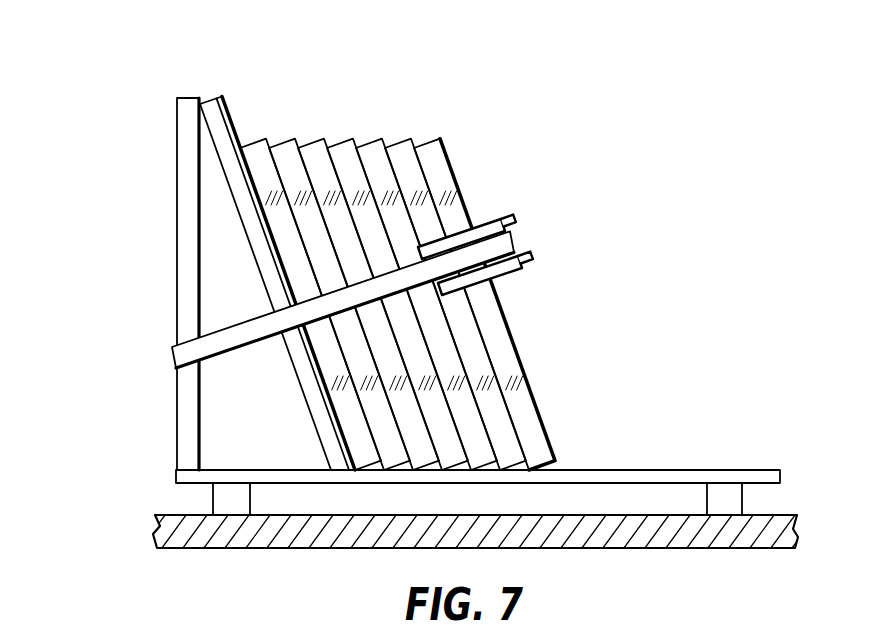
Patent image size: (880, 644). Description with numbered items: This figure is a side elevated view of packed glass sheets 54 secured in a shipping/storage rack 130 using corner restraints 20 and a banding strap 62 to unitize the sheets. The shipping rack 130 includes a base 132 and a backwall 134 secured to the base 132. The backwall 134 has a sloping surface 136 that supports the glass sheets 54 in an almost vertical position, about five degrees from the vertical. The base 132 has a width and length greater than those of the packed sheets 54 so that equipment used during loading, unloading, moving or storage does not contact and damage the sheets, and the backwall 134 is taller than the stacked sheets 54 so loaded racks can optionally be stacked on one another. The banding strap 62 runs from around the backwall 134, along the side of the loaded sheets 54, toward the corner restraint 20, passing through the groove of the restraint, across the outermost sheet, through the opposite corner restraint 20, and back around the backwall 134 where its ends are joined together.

The corner restraint 20 is at (505, 209).
The glass sheets 54 is at (365, 138).
The banding strap 62 is at (240, 347).
The shipping/storage rack 130 is at (426, 265).
The base 132 is at (762, 470).
The backwall 134 is at (208, 94).
The sloping surface 136 is at (245, 162).